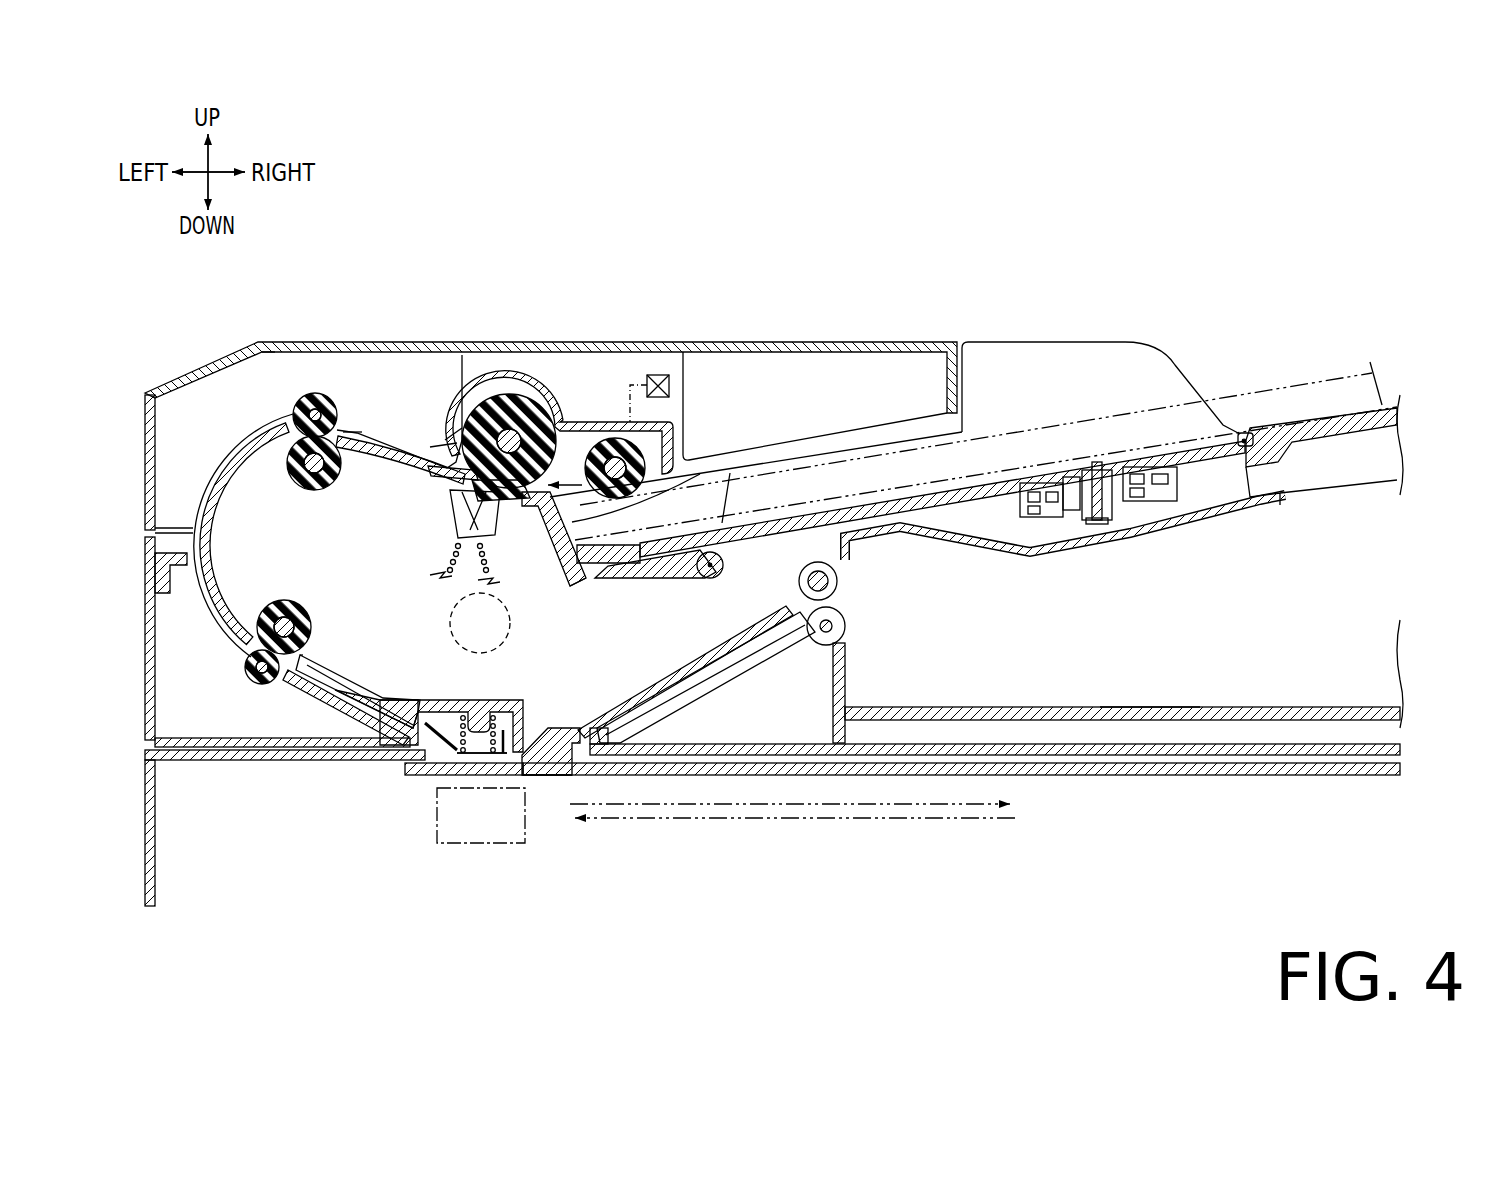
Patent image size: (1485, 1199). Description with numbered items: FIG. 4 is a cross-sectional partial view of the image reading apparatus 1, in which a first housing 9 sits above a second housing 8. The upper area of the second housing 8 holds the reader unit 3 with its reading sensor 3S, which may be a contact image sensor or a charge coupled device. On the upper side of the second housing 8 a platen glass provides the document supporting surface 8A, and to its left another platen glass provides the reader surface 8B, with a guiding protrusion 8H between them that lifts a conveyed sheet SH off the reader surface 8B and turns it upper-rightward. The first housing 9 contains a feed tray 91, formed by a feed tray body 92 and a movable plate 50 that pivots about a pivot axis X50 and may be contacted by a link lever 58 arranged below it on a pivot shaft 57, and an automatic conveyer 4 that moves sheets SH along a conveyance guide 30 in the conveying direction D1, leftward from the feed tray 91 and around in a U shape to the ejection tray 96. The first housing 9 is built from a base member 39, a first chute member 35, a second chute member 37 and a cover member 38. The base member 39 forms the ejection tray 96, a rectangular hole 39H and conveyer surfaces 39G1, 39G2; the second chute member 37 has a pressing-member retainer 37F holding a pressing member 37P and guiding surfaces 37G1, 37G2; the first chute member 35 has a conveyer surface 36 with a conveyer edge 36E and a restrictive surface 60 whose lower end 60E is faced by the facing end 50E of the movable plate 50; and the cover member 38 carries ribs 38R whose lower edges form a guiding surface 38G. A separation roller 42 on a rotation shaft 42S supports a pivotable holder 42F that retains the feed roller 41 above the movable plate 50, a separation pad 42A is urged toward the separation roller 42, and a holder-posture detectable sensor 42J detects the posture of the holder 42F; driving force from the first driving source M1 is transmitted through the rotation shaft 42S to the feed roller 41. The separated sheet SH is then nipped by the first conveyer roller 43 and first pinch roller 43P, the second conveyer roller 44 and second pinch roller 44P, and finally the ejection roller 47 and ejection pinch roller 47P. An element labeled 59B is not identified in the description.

The image reading apparatus 1 is at (937, 243).
The reader unit 3 is at (800, 878).
The reading sensor 3S is at (510, 822).
The automatic conveyer 4 is at (222, 392).
The second housing 8 is at (140, 815).
The document supporting surface 8A is at (1127, 757).
The reader surface 8B is at (452, 760).
The guiding protrusion 8H is at (553, 778).
The first housing 9 is at (133, 397).
The conveyance guide 30 is at (362, 432).
The first chute member 35 is at (378, 467).
The conveyer surface 36 is at (462, 352).
The conveyer edge 36E is at (548, 512).
The second chute member 37 is at (367, 688).
The pressing-member retainer 37F is at (440, 716).
The guiding surface 37G1 is at (332, 712).
The guiding surface 37G2 is at (738, 655).
The pressing member 37P is at (500, 730).
The cover member 38 is at (262, 340).
The guiding surface 38G is at (400, 448).
The ribs 38R is at (303, 370).
The base member 39 is at (1405, 712).
The conveyer surface 39G1 is at (350, 648).
The conveyer surface 39G2 is at (745, 624).
The rectangular hole 39H is at (560, 742).
The feed roller 41 is at (616, 438).
The separation roller 42 is at (511, 395).
The separation pad 42A is at (455, 522).
The holder 42F is at (488, 382).
The holder-posture detectable sensor 42J is at (658, 374).
The rotation shaft 42S is at (536, 445).
The first conveyer roller 43 is at (320, 490).
The first pinch roller 43P is at (316, 393).
The second conveyer roller 44 is at (283, 603).
The second pinch roller 44P is at (247, 680).
The ejection roller 47 is at (838, 582).
The ejection pinch roller 47P is at (848, 627).
The movable plate 50 is at (1200, 458).
The facing end 50E is at (565, 565).
The pivot shaft 57 is at (724, 562).
The link lever 58 is at (633, 582).
The upper cover 59B is at (1062, 365).
The restrictive surface 60 is at (700, 474).
The lower end 60E is at (578, 590).
The feed tray 91 is at (1398, 522).
The feed tray body 92 is at (1332, 440).
The ejection tray 96 is at (1132, 706).
The conveying direction D1 is at (586, 477).
The first driving source M1 is at (466, 638).
The sheet SH is at (1318, 374).
The pivot axis X50 is at (1241, 430).